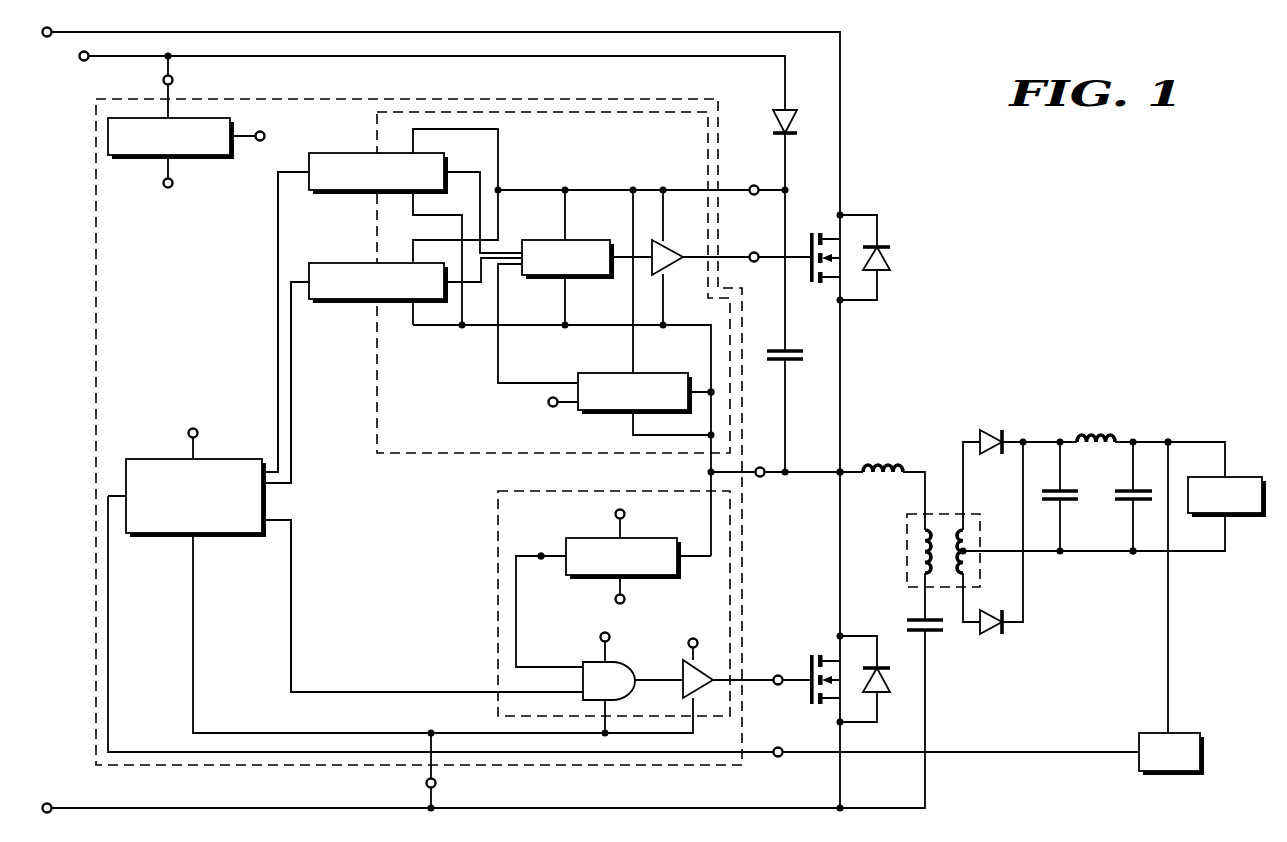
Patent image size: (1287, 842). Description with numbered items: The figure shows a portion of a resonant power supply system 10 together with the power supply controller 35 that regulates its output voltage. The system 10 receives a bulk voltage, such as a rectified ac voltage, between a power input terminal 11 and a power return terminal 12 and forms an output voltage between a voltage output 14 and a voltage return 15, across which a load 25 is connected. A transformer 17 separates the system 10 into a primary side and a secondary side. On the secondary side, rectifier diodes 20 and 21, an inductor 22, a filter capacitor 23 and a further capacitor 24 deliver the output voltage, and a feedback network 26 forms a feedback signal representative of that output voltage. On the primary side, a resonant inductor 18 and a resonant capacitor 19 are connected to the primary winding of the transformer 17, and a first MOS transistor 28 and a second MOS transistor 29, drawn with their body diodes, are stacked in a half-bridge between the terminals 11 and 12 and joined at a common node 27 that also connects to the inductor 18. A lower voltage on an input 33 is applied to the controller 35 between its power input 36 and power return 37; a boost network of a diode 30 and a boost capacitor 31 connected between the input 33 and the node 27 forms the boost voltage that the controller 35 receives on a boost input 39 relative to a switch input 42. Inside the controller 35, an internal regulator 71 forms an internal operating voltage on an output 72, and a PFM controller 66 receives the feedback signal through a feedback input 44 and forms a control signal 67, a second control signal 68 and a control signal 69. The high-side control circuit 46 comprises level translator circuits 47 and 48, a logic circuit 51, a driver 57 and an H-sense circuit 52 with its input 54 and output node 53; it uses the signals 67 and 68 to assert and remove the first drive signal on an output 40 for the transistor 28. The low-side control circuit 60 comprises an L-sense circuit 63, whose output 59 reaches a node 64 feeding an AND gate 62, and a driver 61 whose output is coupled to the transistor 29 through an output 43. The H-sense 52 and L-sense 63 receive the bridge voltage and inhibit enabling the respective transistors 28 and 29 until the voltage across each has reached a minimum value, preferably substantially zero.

The power supply system 10 is at (1108, 172).
The power input terminal 11 is at (47, 38).
The power return terminal 12 is at (47, 802).
The voltage output 14 is at (1168, 437).
The voltage return 15 is at (1134, 556).
The transformer 17 is at (906, 540).
The resonant inductor 18 is at (880, 458).
The resonant capacitor 19 is at (946, 636).
The rectifier diode 20 is at (993, 638).
The rectifier diode 21 is at (991, 427).
The inductor 22 is at (1093, 426).
The filter capacitor 23 is at (1120, 482).
The capacitor 24 is at (1072, 505).
The load 25 is at (1247, 477).
The feedback network 26 is at (1166, 773).
The common node 27 is at (837, 477).
The MOS transistor 28 is at (903, 210).
The MOS transistor 29 is at (866, 612).
The diode 30 is at (774, 109).
The boost capacitor 31 is at (797, 364).
The input 33 is at (84, 62).
The power supply controller 35 is at (95, 358).
The power input 36 is at (174, 80).
The power return 37 is at (168, 189).
The boost input 39 is at (754, 184).
The output 40 is at (754, 251).
The switch input 42 is at (760, 478).
The output 43 is at (778, 674).
The feedback input 44 is at (778, 746).
The high-side control circuit 46 is at (416, 454).
The level translator circuit 47 is at (339, 152).
The level translator circuit 48 is at (339, 262).
The logic circuit 51 is at (592, 239).
The high-side sense circuit 52 is at (590, 413).
The sense output node 53 is at (703, 388).
The sense input 54 is at (538, 383).
The driver circuit 57 is at (678, 249).
The low sense output 59 is at (698, 560).
The low-side control circuit 60 is at (497, 593).
The driver circuit 61 is at (675, 673).
The AND gate 62 is at (588, 661).
The low-side sense circuit 63 is at (585, 576).
The sense node 64 is at (541, 552).
The PFM controller 66 is at (147, 458).
The control signal 67 is at (278, 422).
The second control signal 68 is at (292, 462).
The control signal 69 is at (292, 540).
The internal regulator 71 is at (125, 156).
The output 72 is at (260, 142).